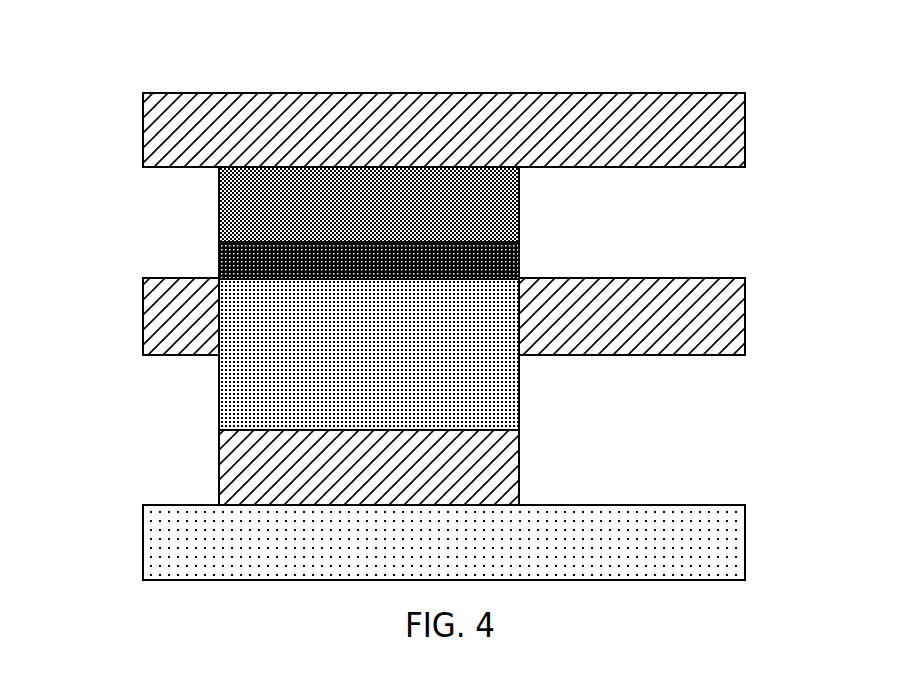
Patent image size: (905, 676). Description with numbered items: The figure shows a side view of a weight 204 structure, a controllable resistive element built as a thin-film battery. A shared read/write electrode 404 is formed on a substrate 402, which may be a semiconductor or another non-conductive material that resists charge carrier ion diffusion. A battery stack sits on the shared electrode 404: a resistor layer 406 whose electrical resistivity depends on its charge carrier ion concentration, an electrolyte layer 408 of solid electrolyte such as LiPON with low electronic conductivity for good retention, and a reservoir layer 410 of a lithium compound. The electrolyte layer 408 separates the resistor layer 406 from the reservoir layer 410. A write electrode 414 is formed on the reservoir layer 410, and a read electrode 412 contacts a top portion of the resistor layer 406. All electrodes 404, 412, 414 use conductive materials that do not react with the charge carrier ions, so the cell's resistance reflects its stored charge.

The weight structure 204 is at (73, 48).
The substrate 402 is at (745, 540).
The shared read/write electrode 404 is at (219, 472).
The resistor layer 406 is at (219, 397).
The electrolyte layer 408 is at (219, 262).
The reservoir layer 410 is at (219, 207).
The read electrode 412 is at (745, 313).
The write electrode 414 is at (745, 127).